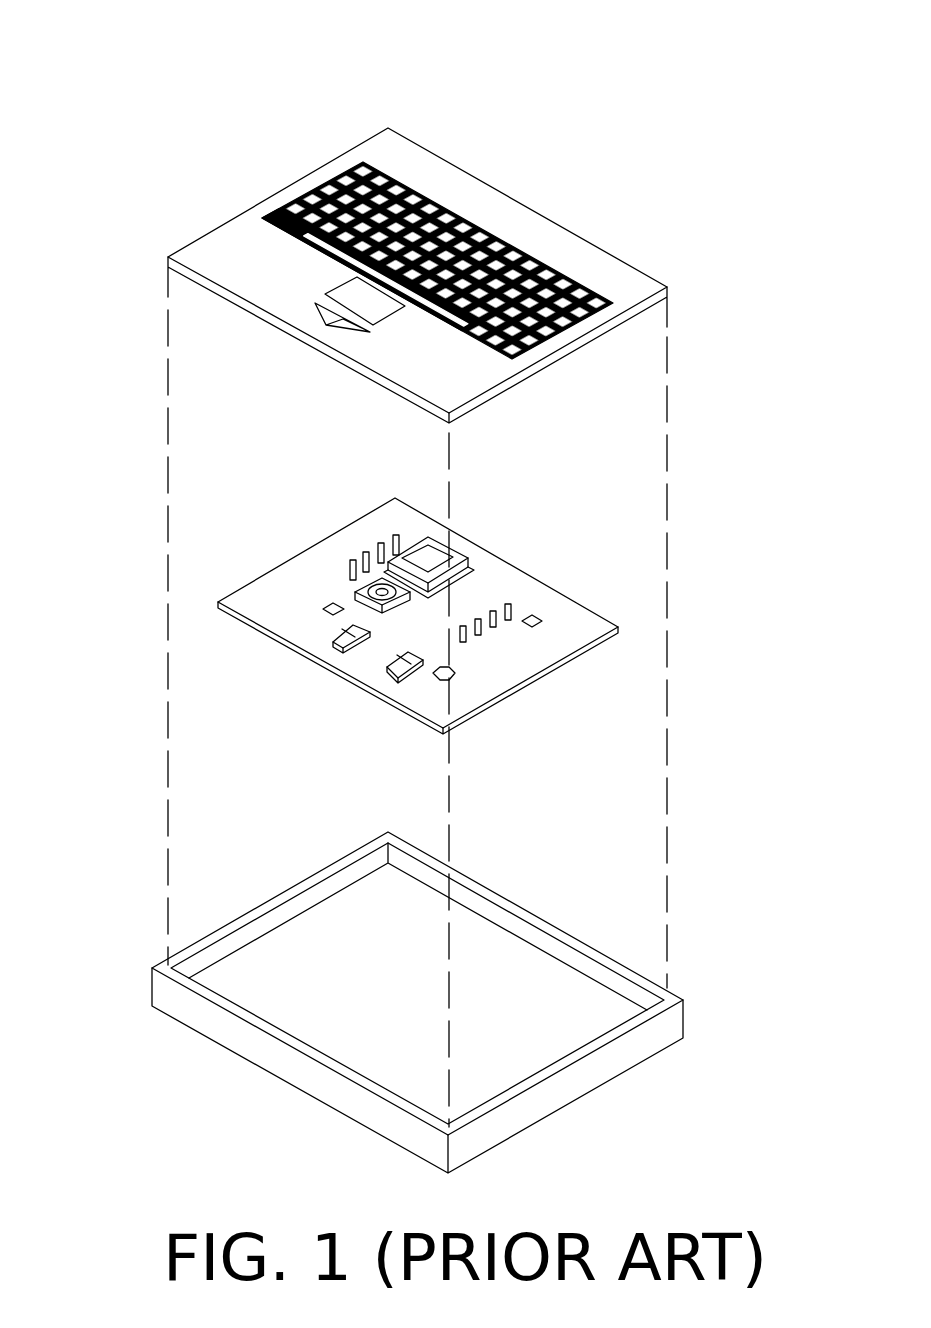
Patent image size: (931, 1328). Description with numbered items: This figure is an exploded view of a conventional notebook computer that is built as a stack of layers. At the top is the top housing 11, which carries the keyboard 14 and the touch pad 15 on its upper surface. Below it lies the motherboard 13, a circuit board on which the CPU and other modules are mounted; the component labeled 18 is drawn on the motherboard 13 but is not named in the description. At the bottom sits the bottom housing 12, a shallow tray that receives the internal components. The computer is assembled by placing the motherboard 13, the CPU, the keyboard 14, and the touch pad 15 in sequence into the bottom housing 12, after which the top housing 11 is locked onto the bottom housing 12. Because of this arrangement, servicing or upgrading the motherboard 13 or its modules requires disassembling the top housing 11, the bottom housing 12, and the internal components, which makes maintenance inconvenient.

The top housing 11 is at (642, 176).
The bottom housing 12 is at (732, 978).
The motherboard 13 is at (547, 590).
The keyboard 14 is at (340, 183).
The touch pad 15 is at (342, 293).
The chip / electronic component 18 is at (427, 540).